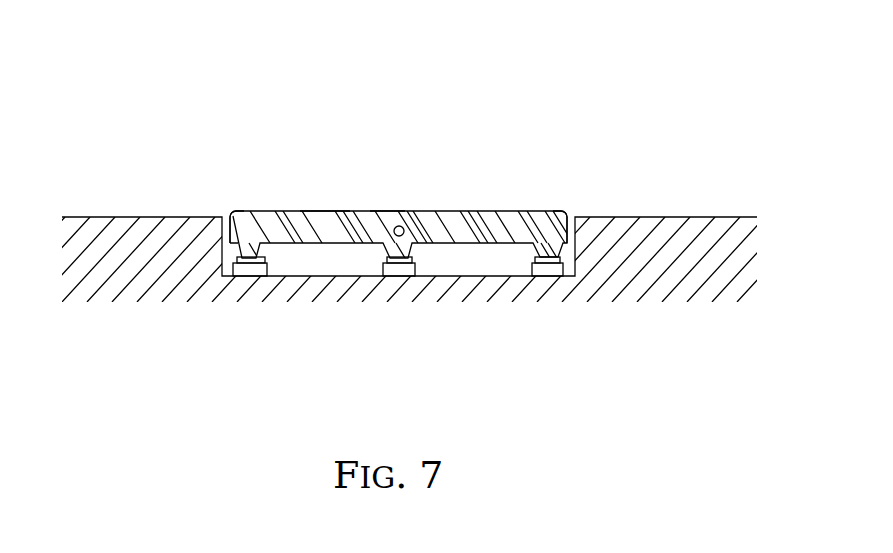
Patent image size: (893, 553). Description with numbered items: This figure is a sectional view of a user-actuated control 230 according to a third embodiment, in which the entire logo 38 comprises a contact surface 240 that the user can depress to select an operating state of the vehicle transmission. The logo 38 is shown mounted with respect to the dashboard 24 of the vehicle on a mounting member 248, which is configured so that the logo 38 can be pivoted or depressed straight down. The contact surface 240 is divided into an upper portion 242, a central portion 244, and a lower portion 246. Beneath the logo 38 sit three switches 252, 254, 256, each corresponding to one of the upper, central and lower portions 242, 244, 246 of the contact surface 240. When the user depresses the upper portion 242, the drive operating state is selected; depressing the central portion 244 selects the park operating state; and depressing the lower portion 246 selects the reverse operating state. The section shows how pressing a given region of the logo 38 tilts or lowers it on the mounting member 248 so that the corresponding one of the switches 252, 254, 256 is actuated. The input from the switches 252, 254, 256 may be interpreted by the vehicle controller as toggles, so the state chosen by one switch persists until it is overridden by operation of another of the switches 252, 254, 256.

The dashboard 24 is at (723, 218).
The logo 38 is at (325, 209).
The user-actuated control 230 is at (425, 186).
The contact surface 240 is at (485, 208).
The upper portion 242 is at (237, 208).
The central portion 244 is at (388, 209).
The lower portion 246 is at (560, 217).
The mounting member 248 is at (417, 208).
The switch 252 is at (267, 270).
The switch 254 is at (415, 270).
The switch 256 is at (532, 268).